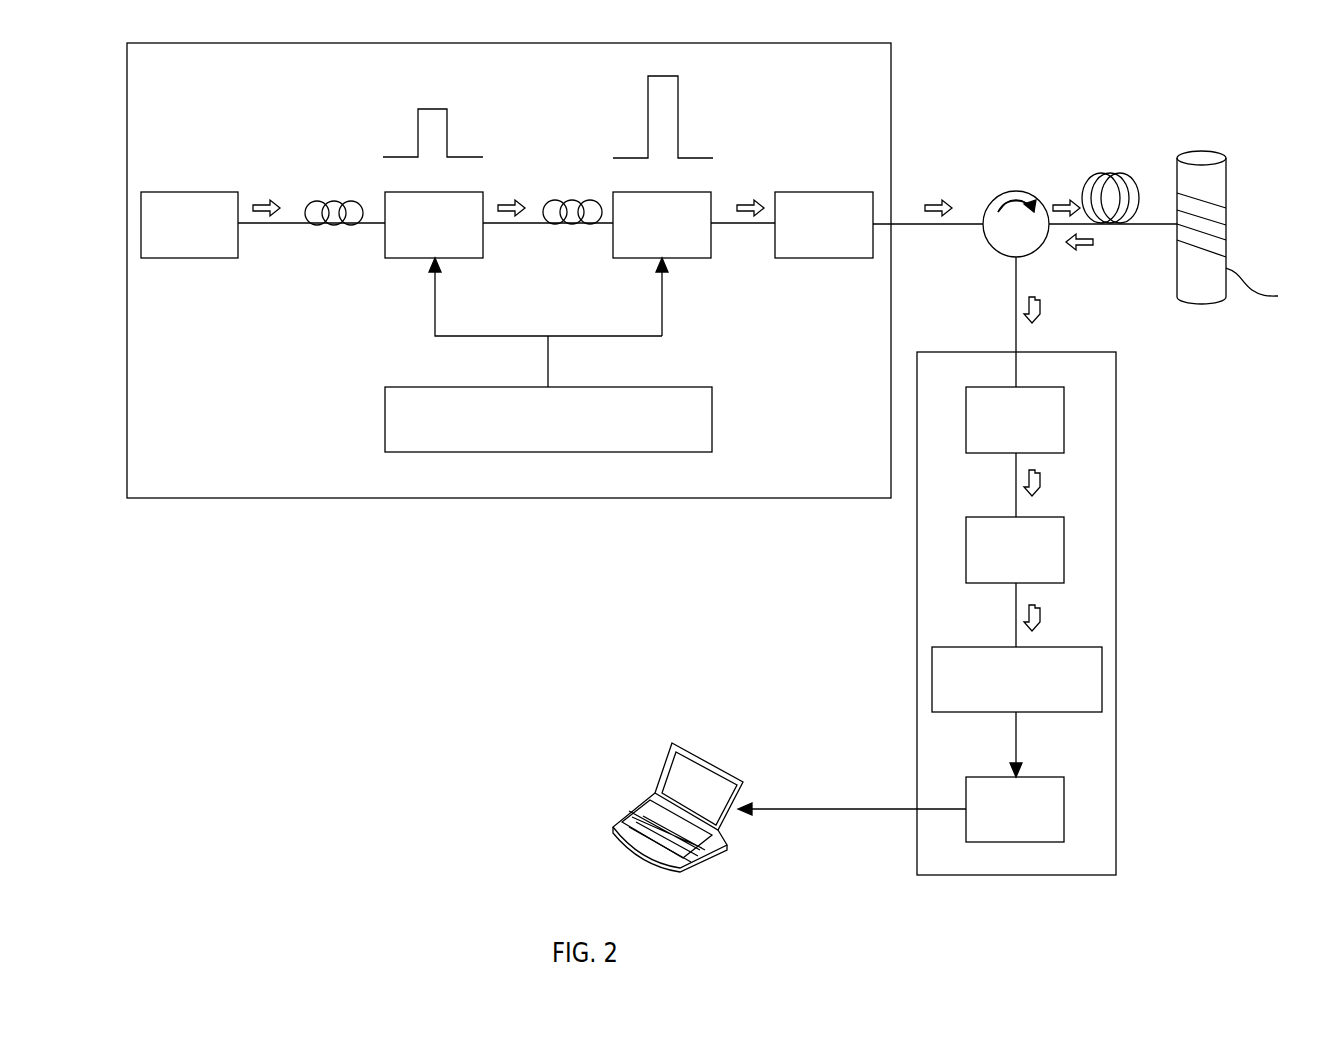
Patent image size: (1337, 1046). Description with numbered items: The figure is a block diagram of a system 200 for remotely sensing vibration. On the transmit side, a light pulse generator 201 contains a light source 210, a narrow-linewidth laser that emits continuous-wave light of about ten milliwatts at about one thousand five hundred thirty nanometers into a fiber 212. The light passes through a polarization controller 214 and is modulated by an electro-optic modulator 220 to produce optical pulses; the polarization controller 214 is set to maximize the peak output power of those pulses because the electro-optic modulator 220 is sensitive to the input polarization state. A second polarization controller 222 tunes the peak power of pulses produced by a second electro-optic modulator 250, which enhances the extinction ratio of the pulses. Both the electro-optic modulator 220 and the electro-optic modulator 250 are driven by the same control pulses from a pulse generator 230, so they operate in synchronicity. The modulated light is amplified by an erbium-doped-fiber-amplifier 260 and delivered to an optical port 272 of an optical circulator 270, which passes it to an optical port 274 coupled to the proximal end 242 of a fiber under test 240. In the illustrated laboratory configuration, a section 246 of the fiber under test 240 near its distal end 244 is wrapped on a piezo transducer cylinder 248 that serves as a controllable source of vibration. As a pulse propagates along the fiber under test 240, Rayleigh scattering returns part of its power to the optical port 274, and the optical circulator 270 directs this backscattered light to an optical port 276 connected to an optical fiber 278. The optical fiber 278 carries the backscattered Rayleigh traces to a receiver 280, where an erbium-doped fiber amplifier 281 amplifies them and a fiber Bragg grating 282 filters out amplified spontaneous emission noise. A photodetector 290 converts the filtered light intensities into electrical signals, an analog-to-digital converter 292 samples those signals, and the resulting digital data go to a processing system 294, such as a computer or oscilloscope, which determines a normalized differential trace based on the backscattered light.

The system 200 is at (320, 713).
The light pulse generator 201 is at (183, 102).
The light source 210 is at (205, 250).
The fiber 212 is at (275, 223).
The polarization controller 214 is at (330, 224).
The electro-optic modulator 220 is at (449, 250).
The polarization controller 222 is at (573, 225).
The pulse generator 230 is at (563, 444).
The fiber under test 240 is at (1137, 178).
The proximal end 242 is at (1062, 268).
The distal end 244 is at (1278, 300).
The section 246 is at (1245, 198).
The piezo transducer cylinder 248 is at (1227, 168).
The electro-optic modulator 250 is at (677, 250).
The erbium-doped-fiber-amplifier 260 is at (839, 250).
The optical circulator 270 is at (1030, 241).
The optical port 272 is at (983, 224).
The optical port 274 is at (1062, 268).
The optical port 276 is at (1006, 252).
The optical fiber 278 is at (1015, 346).
The receiver 280 is at (1092, 379).
The erbium-doped fiber amplifier 281 is at (1031, 445).
The fiber Bragg grating 282 is at (1031, 575).
The photodetector 290 is at (1031, 705).
The analog-to-digital converter 292 is at (1031, 835).
The processing system 294 is at (713, 802).